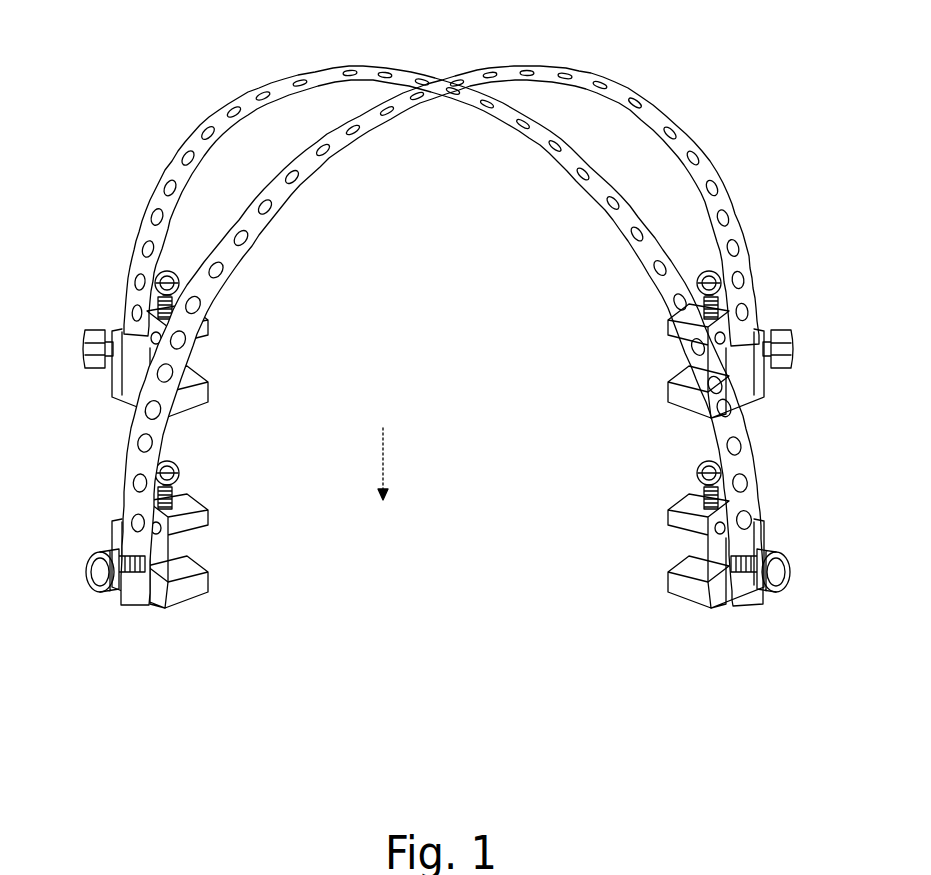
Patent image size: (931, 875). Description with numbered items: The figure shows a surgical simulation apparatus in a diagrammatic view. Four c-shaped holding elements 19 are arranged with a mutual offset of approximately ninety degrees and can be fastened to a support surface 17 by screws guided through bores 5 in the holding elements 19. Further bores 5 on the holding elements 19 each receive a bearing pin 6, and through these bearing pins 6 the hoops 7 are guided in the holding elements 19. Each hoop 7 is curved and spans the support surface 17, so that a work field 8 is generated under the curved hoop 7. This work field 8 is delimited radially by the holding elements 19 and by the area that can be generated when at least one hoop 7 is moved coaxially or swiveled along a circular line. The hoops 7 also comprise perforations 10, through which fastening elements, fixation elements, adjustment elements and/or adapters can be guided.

The bore 5 is at (177, 390).
The bearing pin 6 is at (103, 548).
The hoop 7 is at (223, 270).
The work field 8 is at (384, 447).
The perforation 10 is at (183, 152).
The support surface 17 is at (504, 503).
The holding element 19 is at (198, 408).